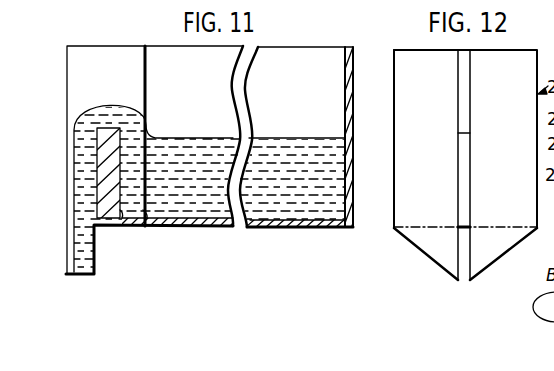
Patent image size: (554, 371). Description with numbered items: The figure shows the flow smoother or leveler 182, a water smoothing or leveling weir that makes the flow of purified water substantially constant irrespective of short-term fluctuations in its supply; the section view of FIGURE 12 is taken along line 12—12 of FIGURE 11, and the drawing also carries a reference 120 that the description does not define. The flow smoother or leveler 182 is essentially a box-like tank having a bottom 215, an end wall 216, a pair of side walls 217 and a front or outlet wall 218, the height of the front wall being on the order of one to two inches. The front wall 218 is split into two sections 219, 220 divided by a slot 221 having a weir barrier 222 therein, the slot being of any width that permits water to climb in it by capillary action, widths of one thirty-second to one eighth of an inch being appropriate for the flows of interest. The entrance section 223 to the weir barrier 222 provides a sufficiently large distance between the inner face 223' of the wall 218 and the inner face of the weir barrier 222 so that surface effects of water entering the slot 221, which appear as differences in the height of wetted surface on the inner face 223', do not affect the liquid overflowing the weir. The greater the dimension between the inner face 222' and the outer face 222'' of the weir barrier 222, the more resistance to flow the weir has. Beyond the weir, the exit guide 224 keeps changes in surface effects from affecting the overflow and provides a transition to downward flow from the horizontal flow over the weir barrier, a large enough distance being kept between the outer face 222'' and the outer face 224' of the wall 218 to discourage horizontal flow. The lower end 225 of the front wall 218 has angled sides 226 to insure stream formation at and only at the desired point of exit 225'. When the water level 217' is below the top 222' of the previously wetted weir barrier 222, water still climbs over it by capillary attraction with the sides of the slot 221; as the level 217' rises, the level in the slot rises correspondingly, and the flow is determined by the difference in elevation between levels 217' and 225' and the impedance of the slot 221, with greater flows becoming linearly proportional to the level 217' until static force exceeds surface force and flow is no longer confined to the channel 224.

In FIG. 11, the section line 12— 12 is at (26, 8).
In FIG. 11, the housing wall 120 is at (112, 50).
In FIG. 11, the flow smoother or leveler 182 is at (307, 47).
In FIG. 12, the flow smoother or leveler 182 is at (533, 50).
In FIG. 11, the bottom 215 is at (273, 228).
In FIG. 11, the end wall 216 is at (345, 114).
In FIG. 11, the side walls 217 is at (193, 151).
In FIG. 11, the water level 217' is at (292, 157).
In FIG. 11, the front or outlet wall 218 is at (150, 68).
In FIG. 12, the front wall section 219 is at (516, 139).
In FIG. 12, the front wall section 220 is at (438, 139).
In FIG. 12, the slot 221 is at (468, 99).
In FIG. 11, the weir barrier 222 is at (139, 184).
In FIG. 12, the weir barrier 222 is at (486, 196).
In FIG. 11, the inner face or top of weir barrier 222' is at (133, 233).
In FIG. 11, the outer face of weir barrier 222'' is at (57, 213).
In FIG. 12, the outer face of weir barrier 222'' is at (465, 207).
In FIG. 11, the entrance section 223 is at (152, 178).
In FIG. 11, the inner face of wall 223' is at (167, 230).
In FIG. 11, the exit guide 224 is at (132, 188).
In FIG. 11, the outer face of wall 224' is at (46, 199).
In FIG. 11, the lower end of front wall 225 is at (149, 260).
In FIG. 12, the lower end of front wall 225 is at (422, 278).
In FIG. 12, the point of exit 225' is at (440, 298).
In FIG. 12, the angled sides 226 is at (417, 251).